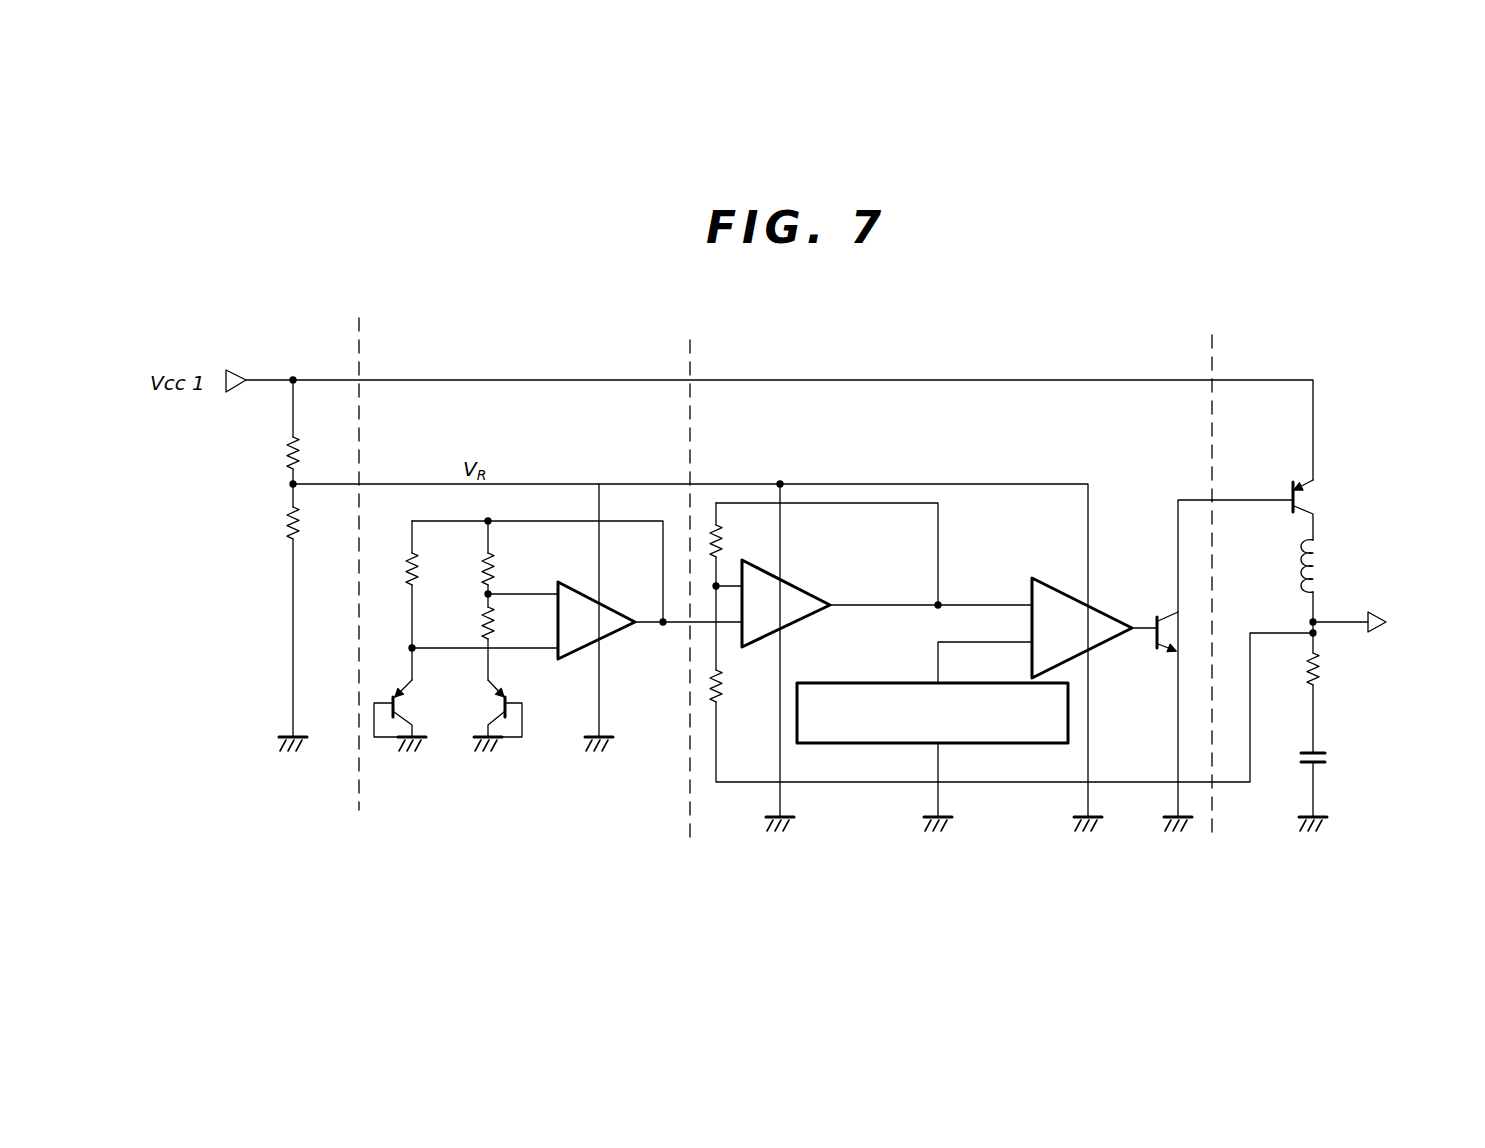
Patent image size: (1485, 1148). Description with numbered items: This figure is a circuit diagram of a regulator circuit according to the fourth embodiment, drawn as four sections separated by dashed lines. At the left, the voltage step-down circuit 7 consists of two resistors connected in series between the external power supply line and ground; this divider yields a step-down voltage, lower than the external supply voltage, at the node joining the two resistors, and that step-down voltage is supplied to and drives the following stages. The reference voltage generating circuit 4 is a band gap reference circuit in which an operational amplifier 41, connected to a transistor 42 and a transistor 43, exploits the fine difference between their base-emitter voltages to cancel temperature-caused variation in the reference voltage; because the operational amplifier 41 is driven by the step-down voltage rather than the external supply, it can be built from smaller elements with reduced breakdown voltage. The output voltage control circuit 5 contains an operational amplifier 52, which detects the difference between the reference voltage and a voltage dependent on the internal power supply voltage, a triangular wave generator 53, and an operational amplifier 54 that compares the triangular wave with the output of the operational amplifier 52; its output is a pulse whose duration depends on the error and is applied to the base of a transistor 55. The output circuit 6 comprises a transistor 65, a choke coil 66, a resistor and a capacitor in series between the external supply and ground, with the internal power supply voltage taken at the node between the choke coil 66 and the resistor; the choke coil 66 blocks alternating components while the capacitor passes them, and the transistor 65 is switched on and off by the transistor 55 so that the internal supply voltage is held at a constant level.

The voltage step-down circuit 7 is at (273, 349).
The reference voltage generating circuit 4 is at (511, 349).
The output voltage control circuit 5 is at (909, 349).
The output circuit 6 is at (1279, 349).
The operational amplifier 41 is at (603, 637).
The transistor 42 is at (400, 684).
The transistor 43 is at (504, 685).
The operational amplifier 52 is at (790, 578).
The triangular wave generator 53 is at (886, 682).
The operational amplifier 54 is at (1095, 608).
The transistor 55 is at (1157, 655).
The transistor 65 is at (1318, 496).
The choke coil 66 is at (1325, 576).